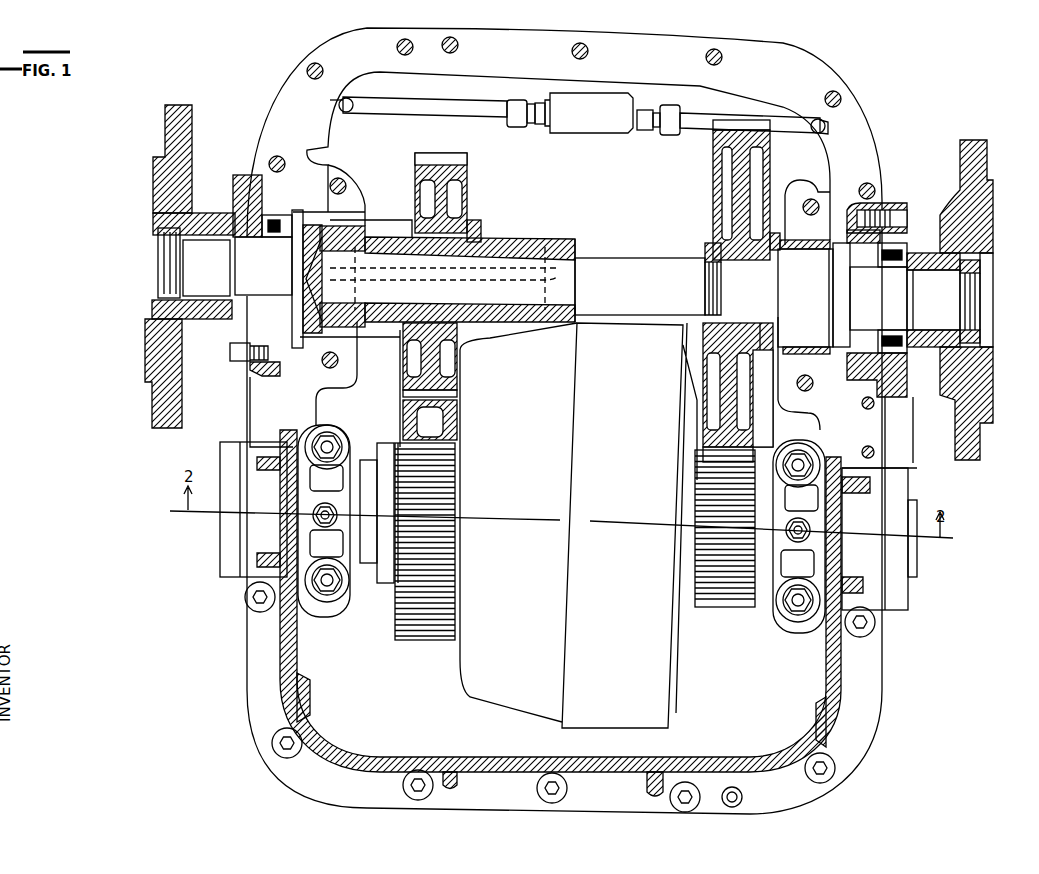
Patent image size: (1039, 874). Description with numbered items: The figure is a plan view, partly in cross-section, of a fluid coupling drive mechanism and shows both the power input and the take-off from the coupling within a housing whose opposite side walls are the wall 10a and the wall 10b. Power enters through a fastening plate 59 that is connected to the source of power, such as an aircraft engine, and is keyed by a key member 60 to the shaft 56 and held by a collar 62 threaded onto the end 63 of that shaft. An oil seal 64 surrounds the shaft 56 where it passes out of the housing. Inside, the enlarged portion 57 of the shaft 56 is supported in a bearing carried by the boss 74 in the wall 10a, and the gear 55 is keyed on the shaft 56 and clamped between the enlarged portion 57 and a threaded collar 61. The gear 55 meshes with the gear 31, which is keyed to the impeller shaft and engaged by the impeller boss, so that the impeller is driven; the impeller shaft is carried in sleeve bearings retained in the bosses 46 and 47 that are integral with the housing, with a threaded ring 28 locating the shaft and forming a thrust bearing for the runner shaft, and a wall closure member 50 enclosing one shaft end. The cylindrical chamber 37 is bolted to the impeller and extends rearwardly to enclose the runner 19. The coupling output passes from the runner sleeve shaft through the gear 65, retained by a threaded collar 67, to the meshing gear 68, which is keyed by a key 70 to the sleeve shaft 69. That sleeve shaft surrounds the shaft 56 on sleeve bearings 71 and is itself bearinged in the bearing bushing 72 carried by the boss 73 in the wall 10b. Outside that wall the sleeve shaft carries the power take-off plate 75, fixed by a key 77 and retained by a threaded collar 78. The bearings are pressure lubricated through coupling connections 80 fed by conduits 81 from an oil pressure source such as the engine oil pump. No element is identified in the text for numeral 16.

The wall of the housing 10a is at (841, 531).
The wall of the housing 10b is at (287, 496).
The input shaft 16 is at (270, 280).
The runner 19 is at (263, 221).
The ring 28 is at (352, 575).
The gear 31 is at (727, 604).
The cylindrical chamber 37 is at (519, 470).
The boss 46 is at (783, 618).
The boss 47 is at (320, 417).
The wall closure member 50 is at (917, 466).
The gear 55 is at (747, 420).
The shaft 56 is at (677, 271).
The enlarged portion 57 is at (809, 300).
The fastening plate 59 is at (988, 363).
The key member 60 is at (940, 331).
The collar 61 is at (704, 250).
The collar 62 is at (979, 272).
The end of the shaft 63 is at (981, 303).
The oil seal 64 is at (900, 256).
The gear 65 is at (393, 629).
The collar 67 is at (382, 447).
The gear 68 is at (447, 358).
The sleeve shaft 69 is at (483, 238).
The key 70 is at (413, 322).
The sleeve bearings 71 is at (377, 250).
The bearing bushing 72 is at (351, 216).
The boss 73 is at (357, 163).
The boss 74 is at (799, 195).
The power take-off plate 75 is at (185, 335).
The key 77 is at (203, 241).
The collar 78 is at (147, 305).
The coupling connection 80 is at (564, 503).
The conduits 81 is at (484, 112).